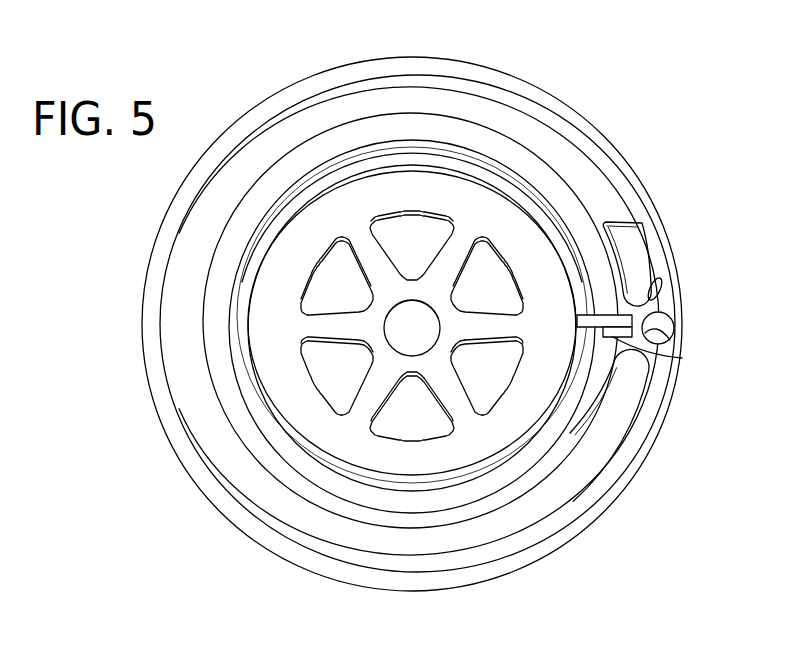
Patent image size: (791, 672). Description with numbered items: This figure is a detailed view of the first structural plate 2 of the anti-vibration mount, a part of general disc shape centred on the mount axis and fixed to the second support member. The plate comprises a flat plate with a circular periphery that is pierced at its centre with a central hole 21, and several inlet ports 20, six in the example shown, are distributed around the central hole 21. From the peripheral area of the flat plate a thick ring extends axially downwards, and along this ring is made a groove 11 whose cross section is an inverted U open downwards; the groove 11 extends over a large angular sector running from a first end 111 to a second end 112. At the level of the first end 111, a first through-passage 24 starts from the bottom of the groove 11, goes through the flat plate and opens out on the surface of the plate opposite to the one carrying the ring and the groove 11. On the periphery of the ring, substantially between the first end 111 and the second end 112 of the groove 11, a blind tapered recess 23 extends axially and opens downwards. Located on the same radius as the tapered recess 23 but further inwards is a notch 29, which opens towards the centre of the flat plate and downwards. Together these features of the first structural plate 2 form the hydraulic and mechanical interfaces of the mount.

The first structural plate 2 is at (138, 244).
The groove 11 is at (510, 122).
The inlet ports 20 is at (427, 418).
The central hole 21 is at (417, 331).
The blind tapered recess 23 is at (660, 337).
The first through-passage 24 is at (622, 258).
The notch 29 is at (672, 361).
The first end 111 is at (657, 287).
The second end 112 is at (630, 363).